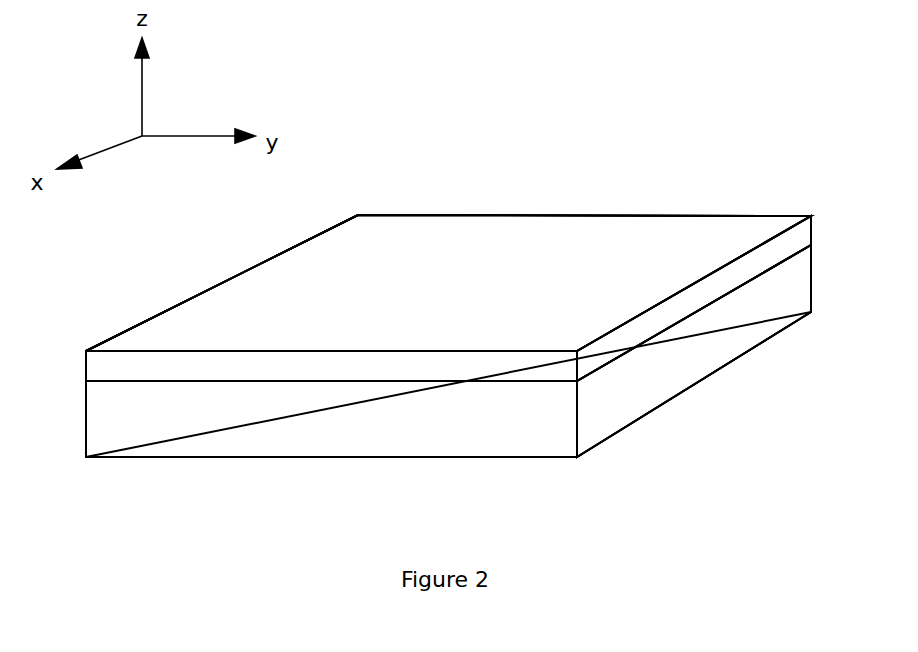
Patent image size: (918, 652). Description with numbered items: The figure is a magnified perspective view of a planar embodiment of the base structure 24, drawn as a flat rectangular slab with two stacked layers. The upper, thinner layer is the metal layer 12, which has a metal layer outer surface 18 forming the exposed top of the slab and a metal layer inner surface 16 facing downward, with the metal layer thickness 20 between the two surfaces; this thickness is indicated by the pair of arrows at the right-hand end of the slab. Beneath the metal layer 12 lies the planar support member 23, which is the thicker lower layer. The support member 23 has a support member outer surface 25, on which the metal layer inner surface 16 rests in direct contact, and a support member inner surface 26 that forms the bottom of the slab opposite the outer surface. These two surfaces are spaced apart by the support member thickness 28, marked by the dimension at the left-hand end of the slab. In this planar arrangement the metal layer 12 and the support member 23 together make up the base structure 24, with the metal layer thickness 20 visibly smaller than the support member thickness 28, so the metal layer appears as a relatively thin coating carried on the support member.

The base structure 24 is at (589, 128).
The metal layer 12 is at (110, 335).
The metal layer outer surface 18 is at (212, 322).
The support member thickness 28 is at (73, 381).
The metal layer thickness 20 is at (831, 270).
The metal layer inner surface 16 is at (758, 273).
The support member outer surface 25 is at (627, 352).
The support member 23 is at (319, 432).
The support member inner surface 26 is at (520, 458).